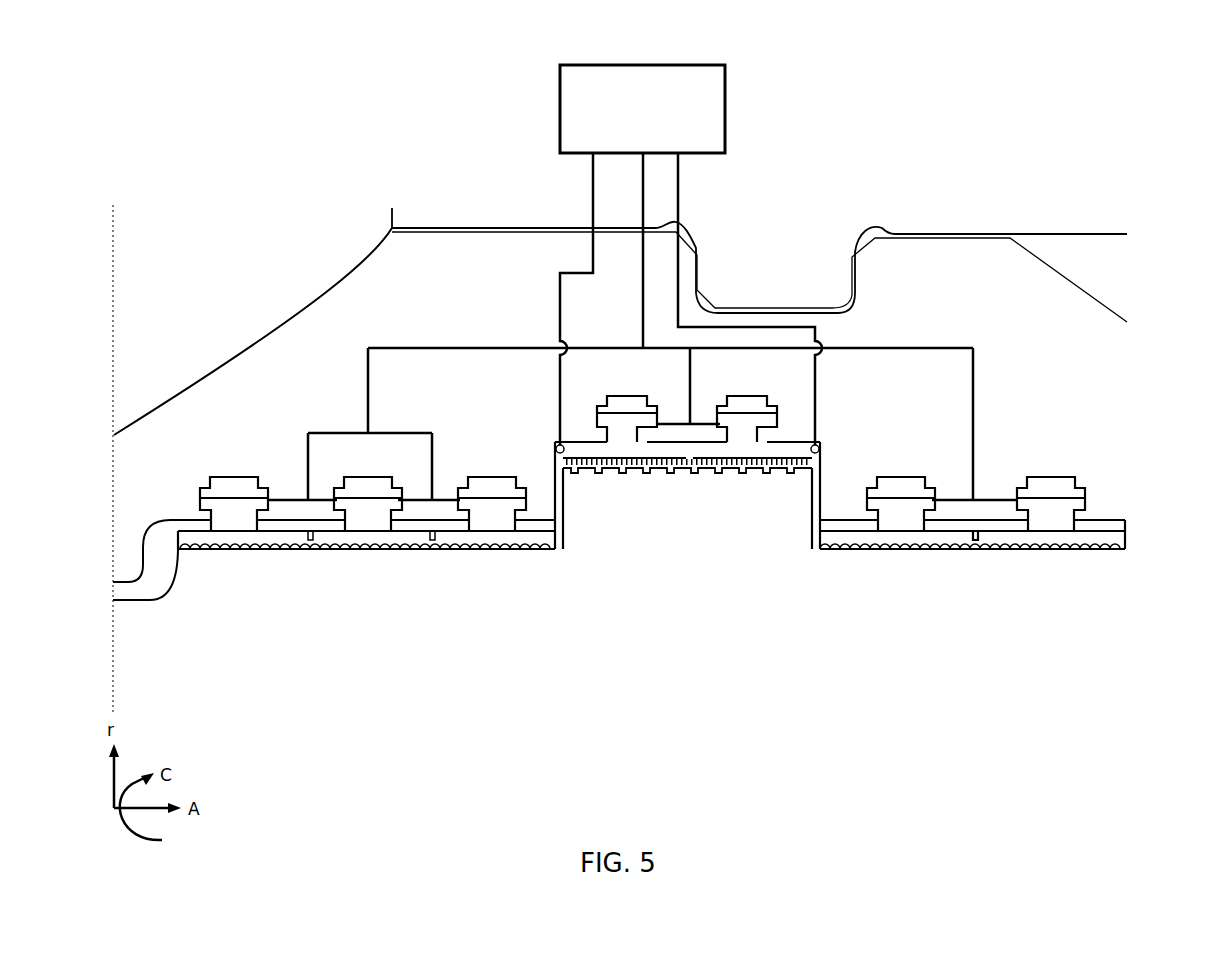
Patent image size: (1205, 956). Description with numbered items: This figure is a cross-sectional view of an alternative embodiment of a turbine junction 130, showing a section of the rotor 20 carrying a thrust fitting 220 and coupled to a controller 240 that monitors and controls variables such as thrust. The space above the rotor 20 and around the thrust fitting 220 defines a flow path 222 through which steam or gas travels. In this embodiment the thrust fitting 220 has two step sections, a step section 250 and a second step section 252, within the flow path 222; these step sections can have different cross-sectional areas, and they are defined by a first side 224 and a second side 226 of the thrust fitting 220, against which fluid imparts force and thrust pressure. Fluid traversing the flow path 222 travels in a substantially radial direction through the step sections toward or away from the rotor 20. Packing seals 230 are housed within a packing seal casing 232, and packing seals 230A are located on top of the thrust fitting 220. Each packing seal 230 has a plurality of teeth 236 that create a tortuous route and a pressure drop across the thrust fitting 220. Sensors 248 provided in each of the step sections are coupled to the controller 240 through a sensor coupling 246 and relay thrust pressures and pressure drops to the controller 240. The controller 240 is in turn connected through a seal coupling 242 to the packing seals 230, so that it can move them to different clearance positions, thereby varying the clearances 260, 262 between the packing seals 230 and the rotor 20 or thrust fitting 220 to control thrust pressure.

The junction 130 is at (230, 60).
The controller 240 is at (604, 132).
The sensor coupling 246 is at (593, 170).
The seal coupling 242 is at (640, 275).
The packing seal casing 232 is at (921, 278).
The sensor 248 is at (557, 446).
The packing seal 230A is at (633, 441).
The thrust fitting 220 is at (681, 516).
The step section 250 is at (561, 505).
The first side 224 is at (563, 487).
The second step section 252 is at (817, 502).
The second side 226 is at (810, 480).
The clearance 260 is at (740, 470).
The packing seal 230 is at (240, 517).
The rotor 20 is at (217, 586).
The teeth 236 is at (331, 540).
The flow path 222 is at (147, 578).
The clearance 262 is at (877, 542).